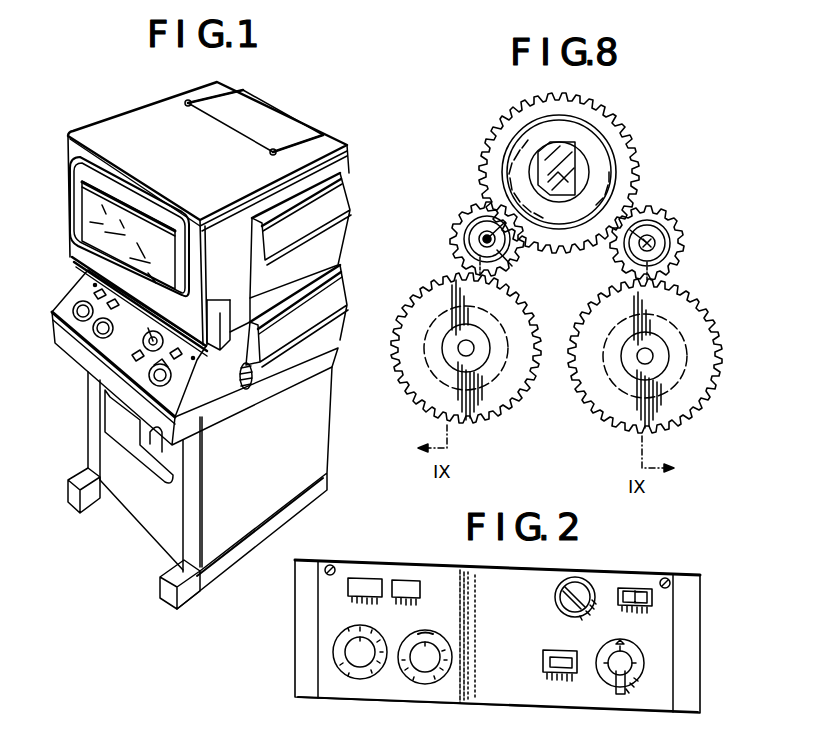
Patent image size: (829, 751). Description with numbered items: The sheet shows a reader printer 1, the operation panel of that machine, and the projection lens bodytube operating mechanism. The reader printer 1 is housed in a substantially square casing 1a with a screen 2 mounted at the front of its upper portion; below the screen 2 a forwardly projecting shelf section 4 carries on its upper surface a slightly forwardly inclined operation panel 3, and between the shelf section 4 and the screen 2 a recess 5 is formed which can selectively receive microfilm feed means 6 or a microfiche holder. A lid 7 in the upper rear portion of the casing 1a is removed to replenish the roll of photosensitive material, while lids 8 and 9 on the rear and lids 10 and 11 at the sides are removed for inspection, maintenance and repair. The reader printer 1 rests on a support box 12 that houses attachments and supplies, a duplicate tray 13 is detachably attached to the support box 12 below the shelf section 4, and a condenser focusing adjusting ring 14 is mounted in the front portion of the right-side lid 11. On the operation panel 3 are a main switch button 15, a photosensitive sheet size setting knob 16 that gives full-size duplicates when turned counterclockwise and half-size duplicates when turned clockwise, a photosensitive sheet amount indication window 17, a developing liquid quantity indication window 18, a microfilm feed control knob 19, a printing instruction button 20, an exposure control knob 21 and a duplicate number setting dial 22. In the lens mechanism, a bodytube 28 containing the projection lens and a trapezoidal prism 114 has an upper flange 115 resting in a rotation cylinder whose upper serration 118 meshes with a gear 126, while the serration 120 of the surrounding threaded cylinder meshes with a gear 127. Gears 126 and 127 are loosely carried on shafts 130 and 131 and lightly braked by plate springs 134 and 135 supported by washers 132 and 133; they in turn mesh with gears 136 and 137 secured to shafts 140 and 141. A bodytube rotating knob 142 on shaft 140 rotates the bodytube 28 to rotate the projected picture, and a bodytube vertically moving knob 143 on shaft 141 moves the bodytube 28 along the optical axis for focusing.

In FIG. 1, the reader printer 1 is at (353, 170).
In FIG. 1, the casing 1a is at (122, 128).
In FIG. 1, the screen 2 is at (87, 214).
In FIG. 1, the operation panel 3 is at (88, 337).
In FIG. 2, the operation panel 3 is at (670, 607).
In FIG. 1, the shelf section 4 is at (210, 413).
In FIG. 1, the recess 5 is at (83, 262).
In FIG. 1, the microfilm feed means 6 is at (212, 338).
In FIG. 1, the lid 7 is at (282, 97).
In FIG. 1, the lid 8 is at (355, 177).
In FIG. 1, the lid 9 is at (355, 287).
In FIG. 1, the lid 10 is at (345, 227).
In FIG. 1, the lid 11 is at (337, 333).
In FIG. 1, the support box 12 is at (325, 442).
In FIG. 1, the duplicate tray 13 is at (153, 462).
In FIG. 1, the condenser focusing adjusting ring 14 is at (250, 385).
In FIG. 2, the main switch button 15 is at (640, 588).
In FIG. 2, the photosensitive sheet size setting knob 16 is at (582, 586).
In FIG. 2, the photosensitive sheet amount indication window 17 is at (404, 580).
In FIG. 2, the developing liquid quantity indication window 18 is at (358, 578).
In FIG. 2, the microfilm feed control knob 19 is at (628, 683).
In FIG. 2, the printing instruction button 20 is at (567, 680).
In FIG. 2, the exposure control knob 21 is at (415, 680).
In FIG. 2, the duplicate number setting dial 22 is at (370, 679).
In FIG. 8, the bodytube 28 is at (612, 156).
In FIG. 8, the trapezoidal prism 114 is at (572, 148).
In FIG. 8, the flange 115 is at (510, 150).
In FIG. 8, the serration 118 is at (630, 156).
In FIG. 8, the serration 120 is at (515, 112).
In FIG. 8, the gear 126 is at (472, 207).
In FIG. 8, the gear 127 is at (652, 207).
In FIG. 8, the shaft 130 is at (500, 248).
In FIG. 8, the shaft 131 is at (655, 243).
In FIG. 8, the washer 132 is at (508, 274).
In FIG. 8, the washer 133 is at (632, 243).
In FIG. 8, the plate spring 134 is at (480, 239).
In FIG. 8, the plate spring 135 is at (667, 266).
In FIG. 8, the gear 136 is at (530, 324).
In FIG. 8, the gear 137 is at (715, 315).
In FIG. 8, the shaft 140 is at (472, 350).
In FIG. 8, the shaft 141 is at (651, 357).
In FIG. 8, the bodytube rotating knob 142 is at (500, 382).
In FIG. 8, the bodytube vertically moving knob 143 is at (682, 380).